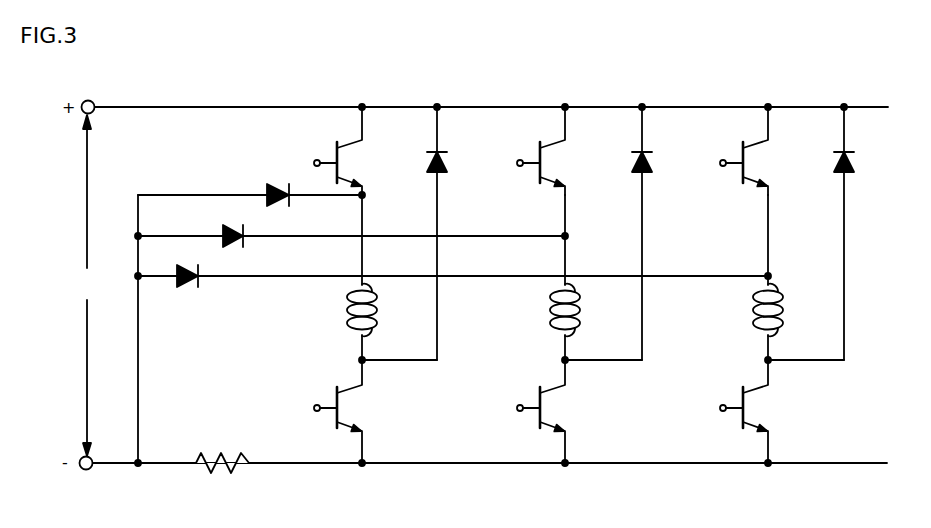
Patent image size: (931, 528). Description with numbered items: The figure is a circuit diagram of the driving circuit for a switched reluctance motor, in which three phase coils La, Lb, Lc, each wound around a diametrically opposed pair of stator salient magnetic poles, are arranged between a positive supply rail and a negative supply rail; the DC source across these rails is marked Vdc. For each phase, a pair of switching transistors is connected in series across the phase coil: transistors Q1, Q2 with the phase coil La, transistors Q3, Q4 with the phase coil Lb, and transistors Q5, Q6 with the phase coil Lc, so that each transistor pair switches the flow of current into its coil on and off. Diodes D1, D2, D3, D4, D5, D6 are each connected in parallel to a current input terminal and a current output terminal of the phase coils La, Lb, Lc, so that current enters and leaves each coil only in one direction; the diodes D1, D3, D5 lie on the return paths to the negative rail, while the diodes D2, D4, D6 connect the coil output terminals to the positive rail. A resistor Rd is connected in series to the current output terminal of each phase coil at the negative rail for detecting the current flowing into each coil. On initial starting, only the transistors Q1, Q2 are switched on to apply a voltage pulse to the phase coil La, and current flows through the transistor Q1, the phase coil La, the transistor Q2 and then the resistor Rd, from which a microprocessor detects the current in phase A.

The transistor Q1 is at (353, 151).
The transistor Q2 is at (354, 411).
The transistor Q3 is at (556, 151).
The transistor Q4 is at (557, 411).
The transistor Q5 is at (759, 151).
The transistor Q6 is at (760, 411).
The diode D1 is at (250, 183).
The diode D2 is at (423, 233).
The diode D3 is at (351, 225).
The diode D4 is at (626, 233).
The diode D5 is at (453, 287).
The diode D6 is at (829, 233).
The phase coil La is at (346, 322).
The phase coil Lb is at (549, 322).
The phase coil Lc is at (752, 322).
The resistor Rd is at (223, 478).
The DC supply voltage Vdc is at (80, 285).